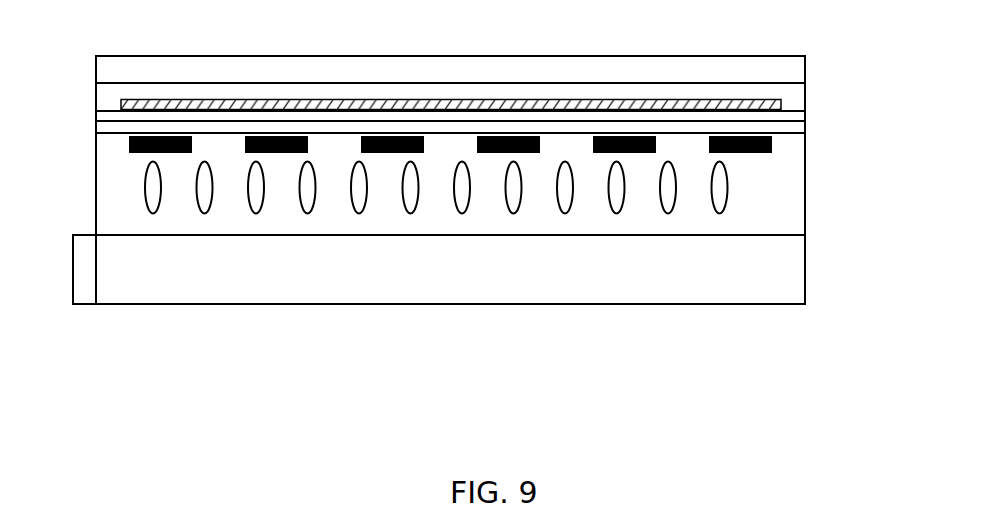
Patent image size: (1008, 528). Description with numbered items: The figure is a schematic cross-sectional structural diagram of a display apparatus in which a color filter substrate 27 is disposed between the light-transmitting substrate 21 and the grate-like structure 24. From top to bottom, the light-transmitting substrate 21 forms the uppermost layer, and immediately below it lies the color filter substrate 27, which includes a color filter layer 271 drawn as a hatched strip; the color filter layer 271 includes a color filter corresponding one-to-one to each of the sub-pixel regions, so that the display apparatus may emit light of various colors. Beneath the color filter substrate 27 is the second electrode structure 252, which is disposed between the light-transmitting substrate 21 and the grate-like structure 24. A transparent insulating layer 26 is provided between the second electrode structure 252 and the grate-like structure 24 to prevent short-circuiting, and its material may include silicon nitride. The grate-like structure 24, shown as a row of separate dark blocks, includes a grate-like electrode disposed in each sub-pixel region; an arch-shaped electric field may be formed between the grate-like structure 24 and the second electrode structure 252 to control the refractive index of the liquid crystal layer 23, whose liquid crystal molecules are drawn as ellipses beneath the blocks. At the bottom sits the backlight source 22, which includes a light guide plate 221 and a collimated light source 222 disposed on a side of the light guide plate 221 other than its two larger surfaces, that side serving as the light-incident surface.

The light-transmitting substrate 21 is at (817, 66).
The color filter substrate 27 is at (459, 106).
The color filter layer 271 is at (642, 88).
The second electrode structure 252 is at (817, 117).
The insulating layer 26 is at (84, 129).
The grate-like structure 24 is at (783, 144).
The liquid crystal layer 23 is at (489, 184).
The backlight source 22 is at (437, 343).
The light guide plate 221 is at (149, 316).
The collimated light source 222 is at (83, 316).